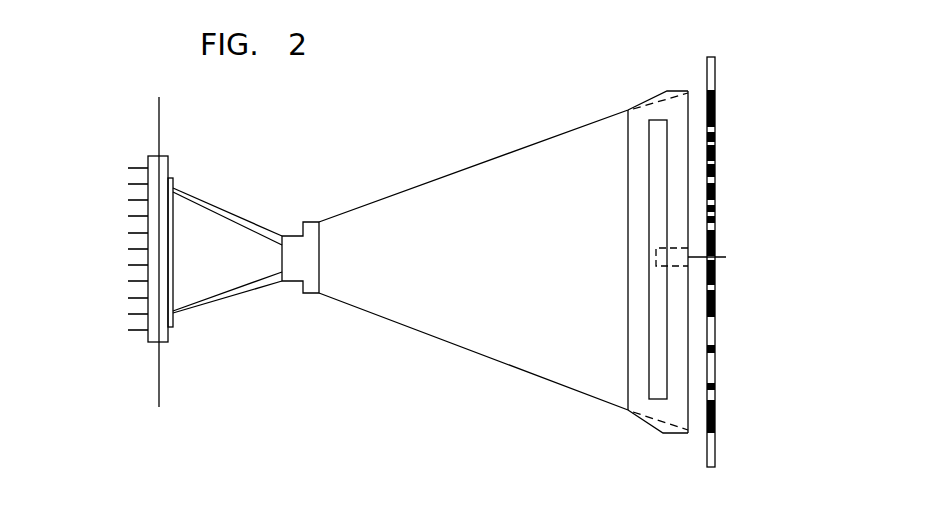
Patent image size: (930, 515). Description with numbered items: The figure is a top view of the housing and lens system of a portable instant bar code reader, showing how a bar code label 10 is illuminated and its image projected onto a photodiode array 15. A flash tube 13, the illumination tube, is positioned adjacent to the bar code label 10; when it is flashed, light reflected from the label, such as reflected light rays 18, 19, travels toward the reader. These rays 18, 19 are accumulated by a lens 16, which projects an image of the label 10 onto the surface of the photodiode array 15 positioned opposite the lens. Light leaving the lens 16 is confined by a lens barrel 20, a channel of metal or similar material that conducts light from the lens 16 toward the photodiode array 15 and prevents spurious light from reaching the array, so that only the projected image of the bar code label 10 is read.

The bar code label 10 is at (722, 197).
The flash tube 13 is at (657, 138).
The photodiode array 15 is at (157, 162).
The lens 16 is at (295, 242).
The reflected light ray 18 is at (487, 162).
The reflected light ray 19 is at (463, 345).
The lens barrel 20 is at (200, 258).